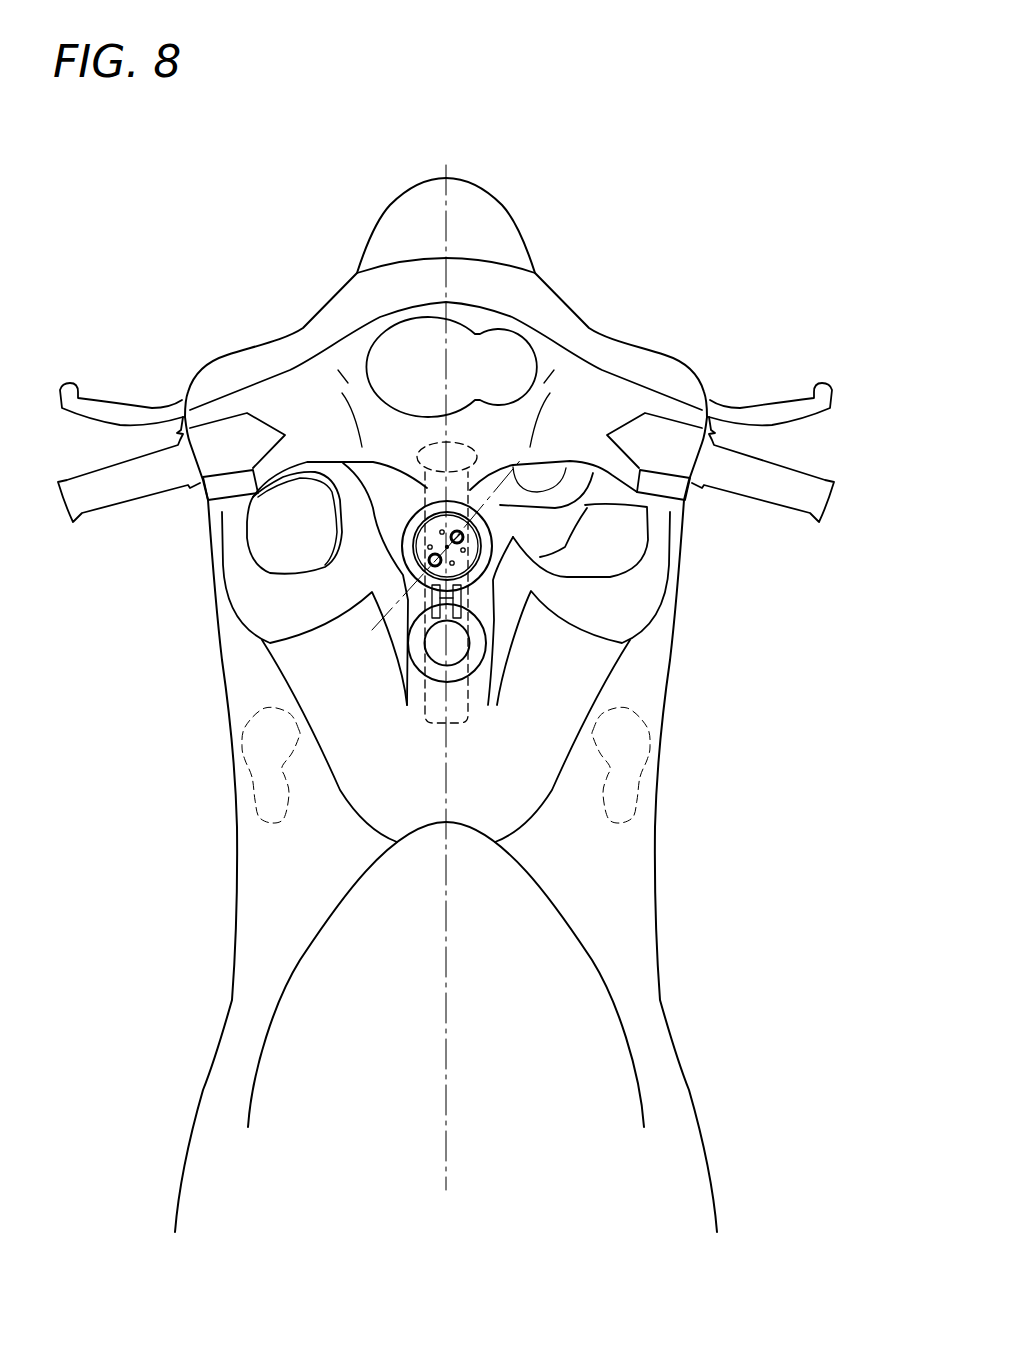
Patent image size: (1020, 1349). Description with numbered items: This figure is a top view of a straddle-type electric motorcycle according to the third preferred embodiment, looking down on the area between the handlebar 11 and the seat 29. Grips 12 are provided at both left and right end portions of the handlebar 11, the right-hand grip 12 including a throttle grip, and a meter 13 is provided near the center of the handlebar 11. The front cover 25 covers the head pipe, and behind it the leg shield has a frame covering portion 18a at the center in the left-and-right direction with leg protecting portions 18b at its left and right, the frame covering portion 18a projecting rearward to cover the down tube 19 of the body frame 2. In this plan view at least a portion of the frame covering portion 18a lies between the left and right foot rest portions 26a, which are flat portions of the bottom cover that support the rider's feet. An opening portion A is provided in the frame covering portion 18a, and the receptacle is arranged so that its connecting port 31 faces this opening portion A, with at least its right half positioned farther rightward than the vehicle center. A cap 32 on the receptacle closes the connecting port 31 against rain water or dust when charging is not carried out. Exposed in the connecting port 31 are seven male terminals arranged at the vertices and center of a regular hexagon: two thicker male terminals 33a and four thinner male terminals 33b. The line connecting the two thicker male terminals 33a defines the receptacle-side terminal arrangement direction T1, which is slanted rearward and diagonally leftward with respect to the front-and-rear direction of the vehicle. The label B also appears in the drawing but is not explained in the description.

The body frame 2 is at (427, 725).
The handlebar 11 is at (673, 437).
The grip 12 is at (783, 475).
The meter 13 is at (488, 347).
The frame covering portion 18a is at (477, 687).
The leg protecting portion 18b is at (255, 596).
The down tube 19 is at (425, 694).
The front cover 25 is at (653, 353).
The foot rest portion 26a is at (257, 755).
The seat 29 is at (603, 1073).
The connecting port 31 is at (492, 533).
The cap 32 is at (476, 671).
The male terminal (thicker) 33a is at (478, 599).
The male terminal 33b is at (495, 555).
The opening portion A is at (430, 564).
The opening B is at (287, 517).
The receptacle-side terminal arrangement direction T1 is at (372, 630).